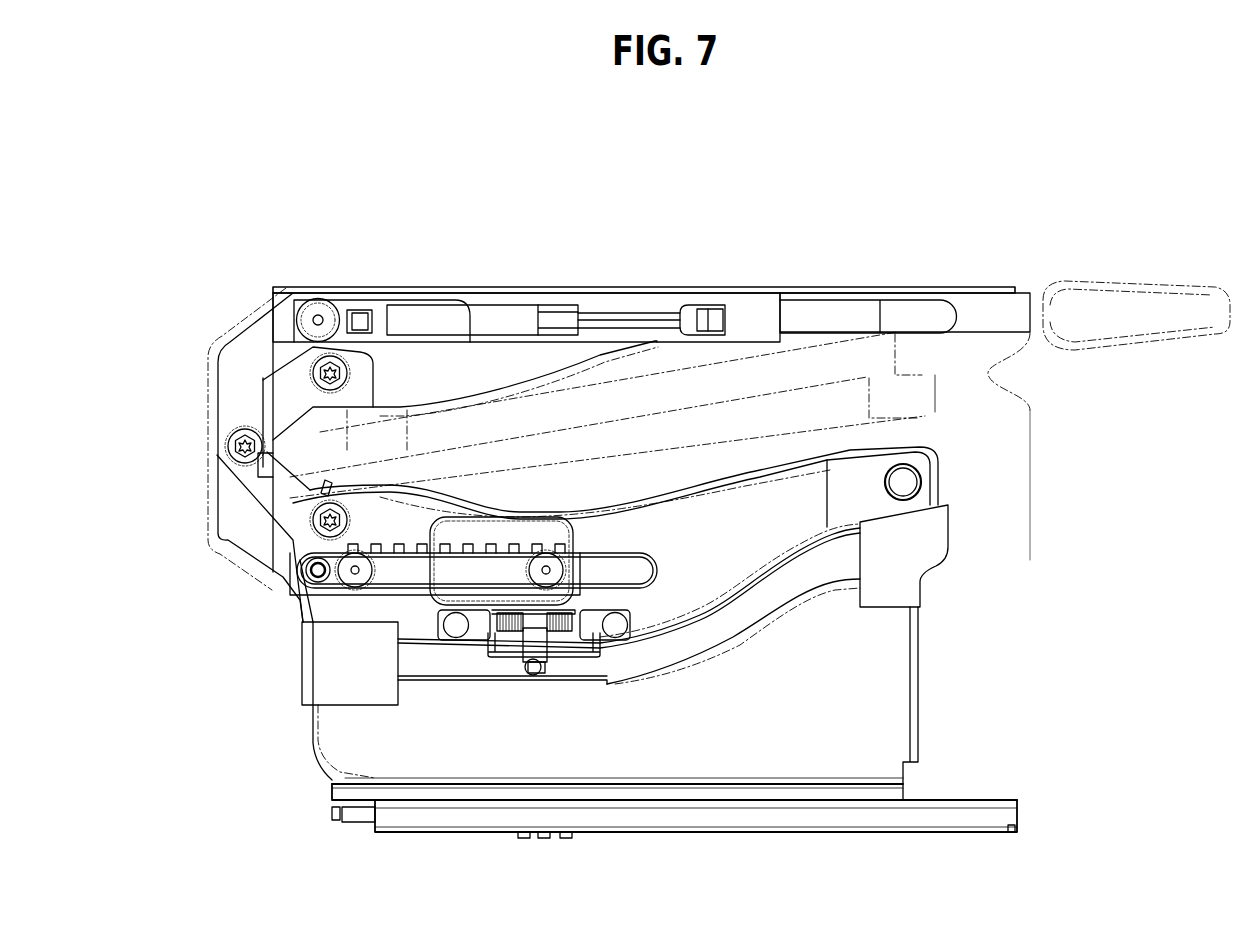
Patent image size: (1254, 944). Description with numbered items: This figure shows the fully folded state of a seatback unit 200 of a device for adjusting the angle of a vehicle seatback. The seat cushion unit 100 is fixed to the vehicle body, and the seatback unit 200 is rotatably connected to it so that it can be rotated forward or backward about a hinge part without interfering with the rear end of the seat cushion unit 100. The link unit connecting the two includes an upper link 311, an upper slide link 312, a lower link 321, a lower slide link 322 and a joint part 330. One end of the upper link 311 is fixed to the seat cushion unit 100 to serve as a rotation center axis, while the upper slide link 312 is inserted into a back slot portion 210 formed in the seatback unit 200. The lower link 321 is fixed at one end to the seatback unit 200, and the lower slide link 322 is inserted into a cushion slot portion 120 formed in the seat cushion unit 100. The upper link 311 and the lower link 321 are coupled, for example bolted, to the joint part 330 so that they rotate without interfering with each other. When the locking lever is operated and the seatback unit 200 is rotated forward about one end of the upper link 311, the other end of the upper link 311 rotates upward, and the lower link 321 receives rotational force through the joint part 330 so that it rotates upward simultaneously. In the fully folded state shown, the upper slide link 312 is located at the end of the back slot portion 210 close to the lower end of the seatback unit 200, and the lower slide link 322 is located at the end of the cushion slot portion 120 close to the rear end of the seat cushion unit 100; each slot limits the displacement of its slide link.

The seat cushion unit 100 is at (978, 476).
The cushion slot portion 120 is at (639, 573).
The seatback unit 200 is at (912, 286).
The back slot portion 210 is at (430, 299).
The upper link 311 is at (282, 337).
The upper slide link 312 is at (338, 299).
The lower link 321 is at (235, 534).
The lower slide link 322 is at (457, 570).
The joint part 330 is at (232, 441).